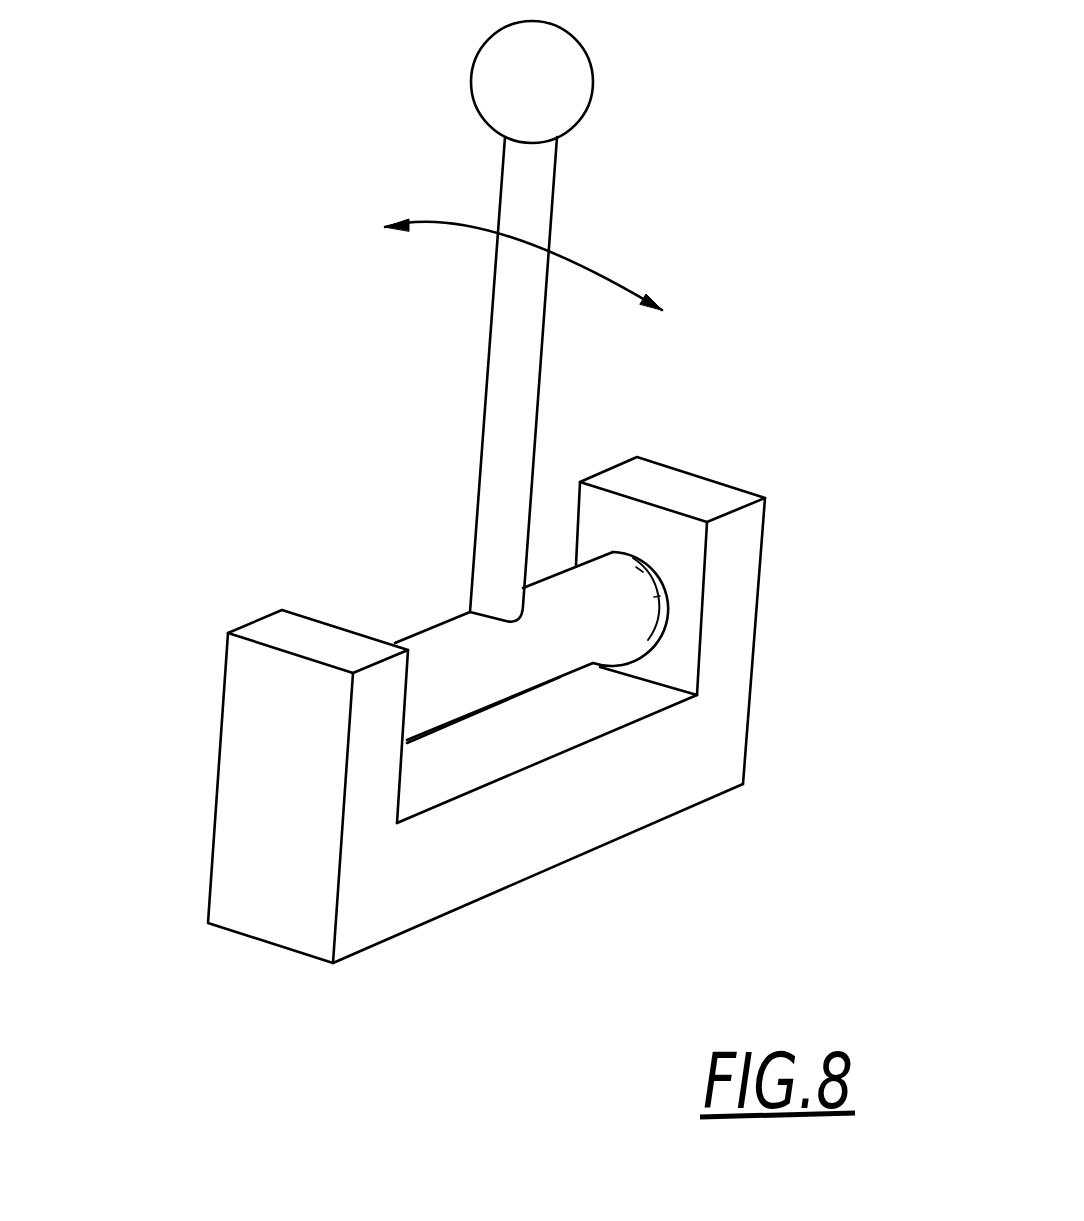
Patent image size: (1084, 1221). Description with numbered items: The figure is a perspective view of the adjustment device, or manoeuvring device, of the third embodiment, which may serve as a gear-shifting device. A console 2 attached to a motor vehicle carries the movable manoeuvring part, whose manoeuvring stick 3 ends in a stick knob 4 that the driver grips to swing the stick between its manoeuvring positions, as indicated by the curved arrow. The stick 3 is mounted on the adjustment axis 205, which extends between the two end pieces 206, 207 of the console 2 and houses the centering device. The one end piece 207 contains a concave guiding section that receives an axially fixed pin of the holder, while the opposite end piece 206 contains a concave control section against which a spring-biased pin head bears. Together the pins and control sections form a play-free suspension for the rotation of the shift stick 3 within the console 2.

The console 2 is at (196, 880).
The manoeuvring stick 3 is at (500, 370).
The stick knob 4 is at (571, 107).
The adjustment axis 205 is at (433, 645).
The end piece 206 is at (247, 718).
The end piece 207 is at (733, 610).